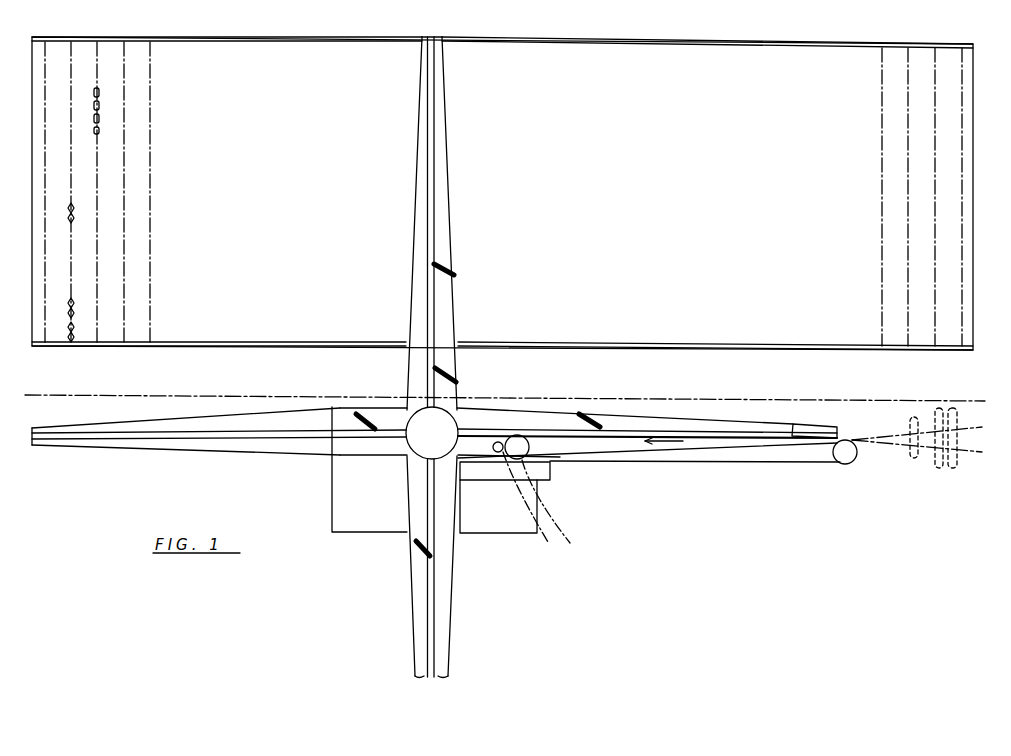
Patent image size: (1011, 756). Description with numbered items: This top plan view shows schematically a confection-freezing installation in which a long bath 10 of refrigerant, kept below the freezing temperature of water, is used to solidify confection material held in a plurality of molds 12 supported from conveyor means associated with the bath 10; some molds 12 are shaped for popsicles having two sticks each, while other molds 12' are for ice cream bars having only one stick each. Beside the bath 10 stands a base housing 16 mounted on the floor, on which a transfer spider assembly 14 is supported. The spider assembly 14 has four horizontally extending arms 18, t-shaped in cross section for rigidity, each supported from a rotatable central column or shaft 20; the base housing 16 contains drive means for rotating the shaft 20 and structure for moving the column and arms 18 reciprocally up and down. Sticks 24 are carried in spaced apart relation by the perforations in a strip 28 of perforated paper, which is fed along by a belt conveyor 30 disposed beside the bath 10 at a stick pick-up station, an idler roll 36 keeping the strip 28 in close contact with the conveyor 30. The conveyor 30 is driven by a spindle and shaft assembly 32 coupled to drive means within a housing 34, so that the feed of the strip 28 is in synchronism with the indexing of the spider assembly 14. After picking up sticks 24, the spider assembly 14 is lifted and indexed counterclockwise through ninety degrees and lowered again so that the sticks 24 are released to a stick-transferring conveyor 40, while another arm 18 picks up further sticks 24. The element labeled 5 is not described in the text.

The base 5 is at (362, 537).
The bath of refrigerant 10 is at (694, 397).
The molds 12 is at (84, 272).
The molds 12' is at (112, 108).
The spider assembly 14 is at (456, 583).
The base housing 16 is at (537, 535).
The arms 18 is at (456, 355).
The rotatable central column or shaft 20 is at (411, 446).
The stick 24 is at (793, 424).
The strip of perforated paper 28 is at (968, 459).
The belt conveyor 30 is at (695, 470).
The spindle and shaft assembly 32 is at (530, 447).
The housing 34 is at (551, 475).
The idler roll 36 is at (493, 447).
The stick-transferring conveyor 40 is at (213, 342).